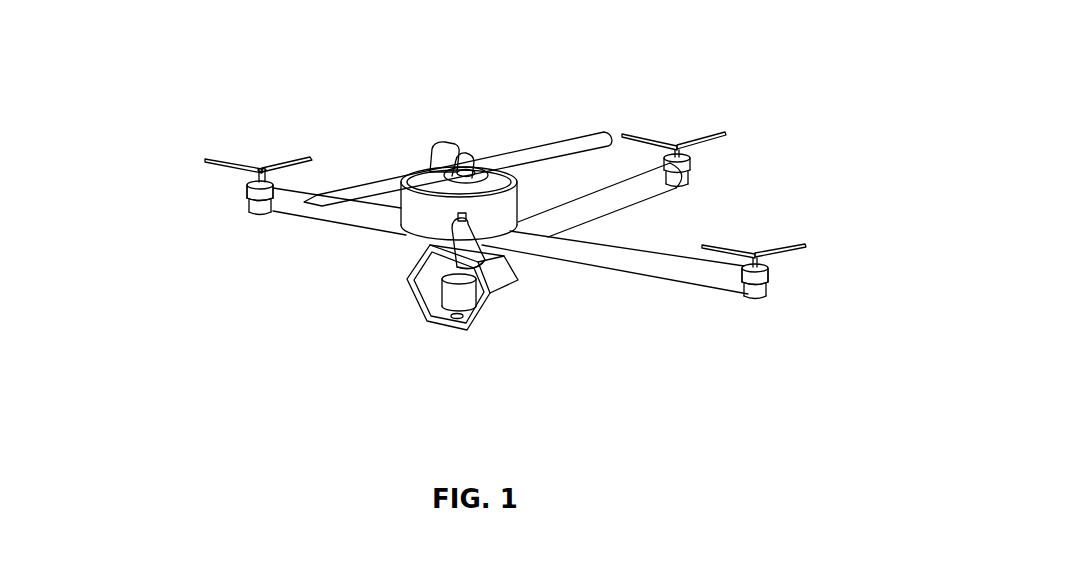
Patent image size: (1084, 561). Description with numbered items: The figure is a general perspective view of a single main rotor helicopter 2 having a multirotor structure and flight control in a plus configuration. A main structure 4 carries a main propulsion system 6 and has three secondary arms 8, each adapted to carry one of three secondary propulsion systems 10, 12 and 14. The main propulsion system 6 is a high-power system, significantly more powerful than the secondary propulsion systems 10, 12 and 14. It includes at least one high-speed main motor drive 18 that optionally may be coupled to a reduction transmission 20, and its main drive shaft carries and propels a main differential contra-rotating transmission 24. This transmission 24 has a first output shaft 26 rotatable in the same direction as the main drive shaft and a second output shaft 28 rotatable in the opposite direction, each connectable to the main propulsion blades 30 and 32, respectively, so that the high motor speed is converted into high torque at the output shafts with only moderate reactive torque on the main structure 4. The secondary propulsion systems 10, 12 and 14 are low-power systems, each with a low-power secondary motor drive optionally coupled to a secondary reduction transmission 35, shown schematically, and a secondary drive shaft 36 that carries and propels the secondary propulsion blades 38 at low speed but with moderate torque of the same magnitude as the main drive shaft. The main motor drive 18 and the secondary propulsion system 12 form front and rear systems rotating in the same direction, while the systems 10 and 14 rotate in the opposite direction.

The single main rotor helicopter 2 is at (556, 68).
The main structure 4 is at (495, 300).
The main propulsion system 6 is at (364, 327).
The secondary arm 8 is at (344, 212).
The secondary propulsion system 10 is at (757, 288).
The secondary propulsion system 12 is at (690, 164).
The secondary propulsion system 14 is at (252, 203).
The main motor drive 18 is at (457, 292).
The reduction transmission 20 is at (452, 260).
The differential contra-rotating transmission 24 is at (408, 165).
The first output shaft 26 is at (458, 158).
The second output shaft 28 is at (495, 213).
The main propulsion blade 30 is at (367, 192).
The main propulsion blade 32 is at (443, 150).
The secondary reduction transmission 35 is at (250, 192).
The secondary drive shaft 36 is at (261, 176).
The secondary propulsion blades 38 is at (227, 160).